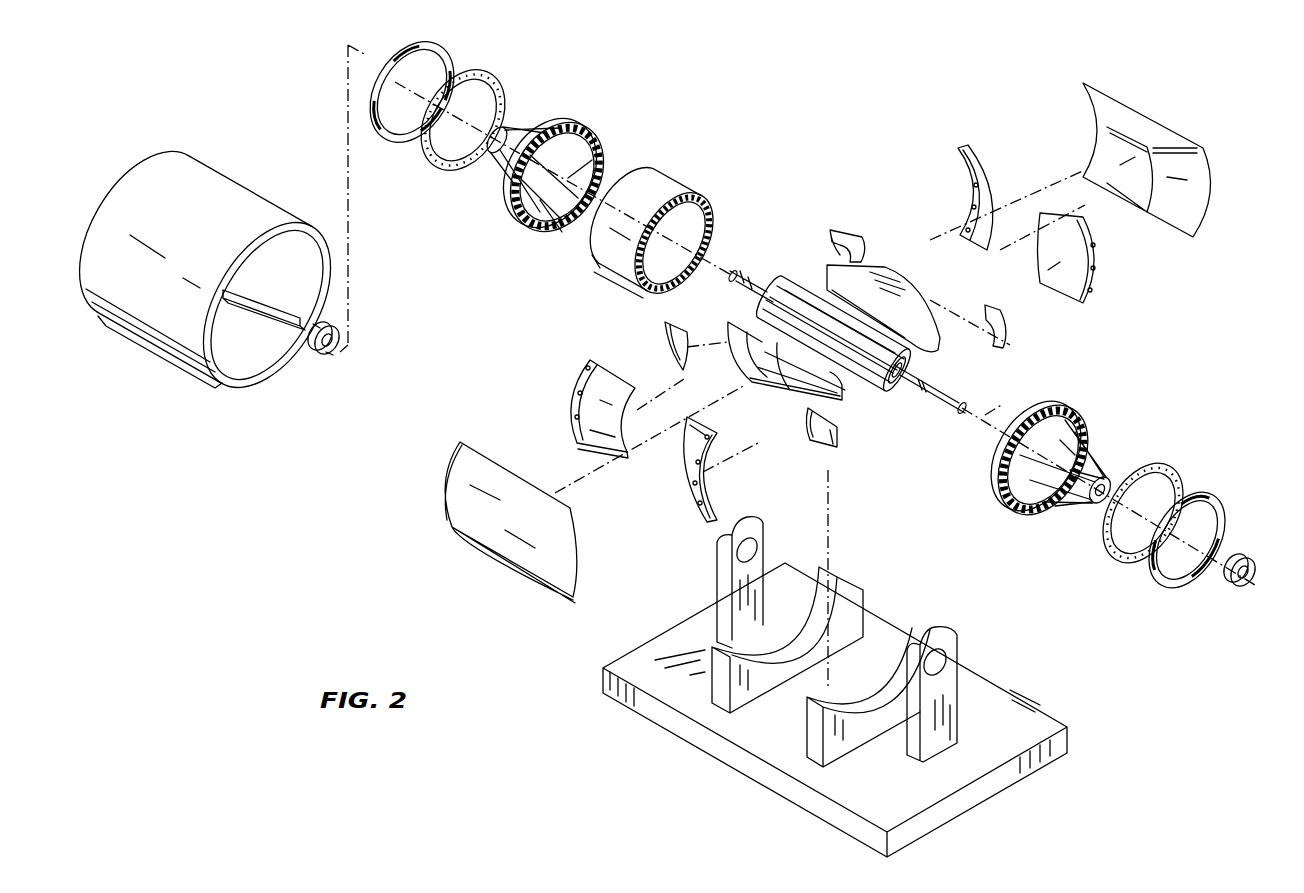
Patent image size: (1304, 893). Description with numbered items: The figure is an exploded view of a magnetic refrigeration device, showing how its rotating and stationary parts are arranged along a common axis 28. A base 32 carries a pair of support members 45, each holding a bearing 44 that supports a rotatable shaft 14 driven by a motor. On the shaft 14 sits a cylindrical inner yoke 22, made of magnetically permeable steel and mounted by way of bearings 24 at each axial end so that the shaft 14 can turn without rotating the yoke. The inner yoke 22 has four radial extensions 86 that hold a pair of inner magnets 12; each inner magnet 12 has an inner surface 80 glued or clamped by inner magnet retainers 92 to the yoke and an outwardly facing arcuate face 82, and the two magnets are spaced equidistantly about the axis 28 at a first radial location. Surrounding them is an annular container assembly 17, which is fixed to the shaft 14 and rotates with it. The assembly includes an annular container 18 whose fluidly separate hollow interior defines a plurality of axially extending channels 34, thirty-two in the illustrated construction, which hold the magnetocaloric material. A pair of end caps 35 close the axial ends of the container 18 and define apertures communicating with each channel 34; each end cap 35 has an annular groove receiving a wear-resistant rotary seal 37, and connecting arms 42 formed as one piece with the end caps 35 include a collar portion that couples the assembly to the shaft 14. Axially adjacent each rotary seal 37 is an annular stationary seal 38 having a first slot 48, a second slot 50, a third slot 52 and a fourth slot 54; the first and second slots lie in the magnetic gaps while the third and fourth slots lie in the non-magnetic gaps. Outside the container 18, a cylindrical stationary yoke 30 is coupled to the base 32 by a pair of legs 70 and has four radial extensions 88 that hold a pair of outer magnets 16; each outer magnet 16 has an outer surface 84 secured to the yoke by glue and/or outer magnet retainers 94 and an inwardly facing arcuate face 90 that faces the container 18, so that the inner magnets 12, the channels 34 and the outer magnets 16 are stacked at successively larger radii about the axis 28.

The inner magnet 12 is at (885, 266).
The rotatable shaft 14 is at (942, 425).
The outer magnet 16 is at (1195, 190).
The annular container assembly 17 is at (560, 60).
The annular container 18 is at (665, 185).
The inner yoke 22 is at (913, 345).
The bearing 24 is at (906, 405).
The axis 28 is at (1027, 370).
The stationary yoke 30 is at (247, 213).
The base 32 is at (1022, 723).
The channel 34 is at (710, 199).
The end cap 35 is at (570, 130).
The rotary seal 37 is at (447, 160).
The stationary seal 38 is at (400, 130).
The connecting arm 42 is at (530, 140).
The bearing 44 is at (325, 352).
The support member 45 is at (718, 578).
The first slot 48 is at (1152, 560).
The second slot 50 is at (1225, 527).
The third slot 52 is at (1197, 490).
The fourth slot 54 is at (1185, 590).
The leg 70 is at (818, 745).
The inner surface 80 is at (882, 325).
The outwardly facing arcuate face 82 is at (781, 385).
The outer surface 84 is at (518, 538).
The radial extension 86 is at (797, 297).
The radial extension 88 is at (258, 308).
The inwardly facing arcuate face 90 is at (1132, 175).
The inner magnet retainer 92 is at (846, 228).
The outer magnet retainer 94 is at (985, 165).